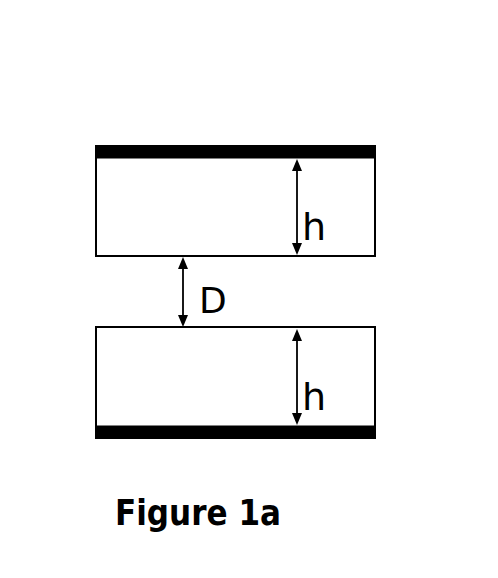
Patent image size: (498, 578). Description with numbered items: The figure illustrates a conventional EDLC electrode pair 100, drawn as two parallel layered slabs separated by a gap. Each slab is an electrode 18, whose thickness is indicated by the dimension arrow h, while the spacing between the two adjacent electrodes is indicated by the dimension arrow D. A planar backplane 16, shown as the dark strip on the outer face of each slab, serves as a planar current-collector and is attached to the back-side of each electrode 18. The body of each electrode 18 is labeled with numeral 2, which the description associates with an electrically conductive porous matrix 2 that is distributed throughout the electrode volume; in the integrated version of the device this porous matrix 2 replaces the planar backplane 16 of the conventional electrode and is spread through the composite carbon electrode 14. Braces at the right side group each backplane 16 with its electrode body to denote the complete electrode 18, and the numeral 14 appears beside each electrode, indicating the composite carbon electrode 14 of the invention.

The conventional EDLC electrode pair 100 is at (246, 120).
The electrically conductive porous matrix 2 is at (92, 205).
The planar backplane 16 is at (96, 153).
The electrode 18 is at (231, 295).
The composite carbon electrode 14 is at (488, 302).